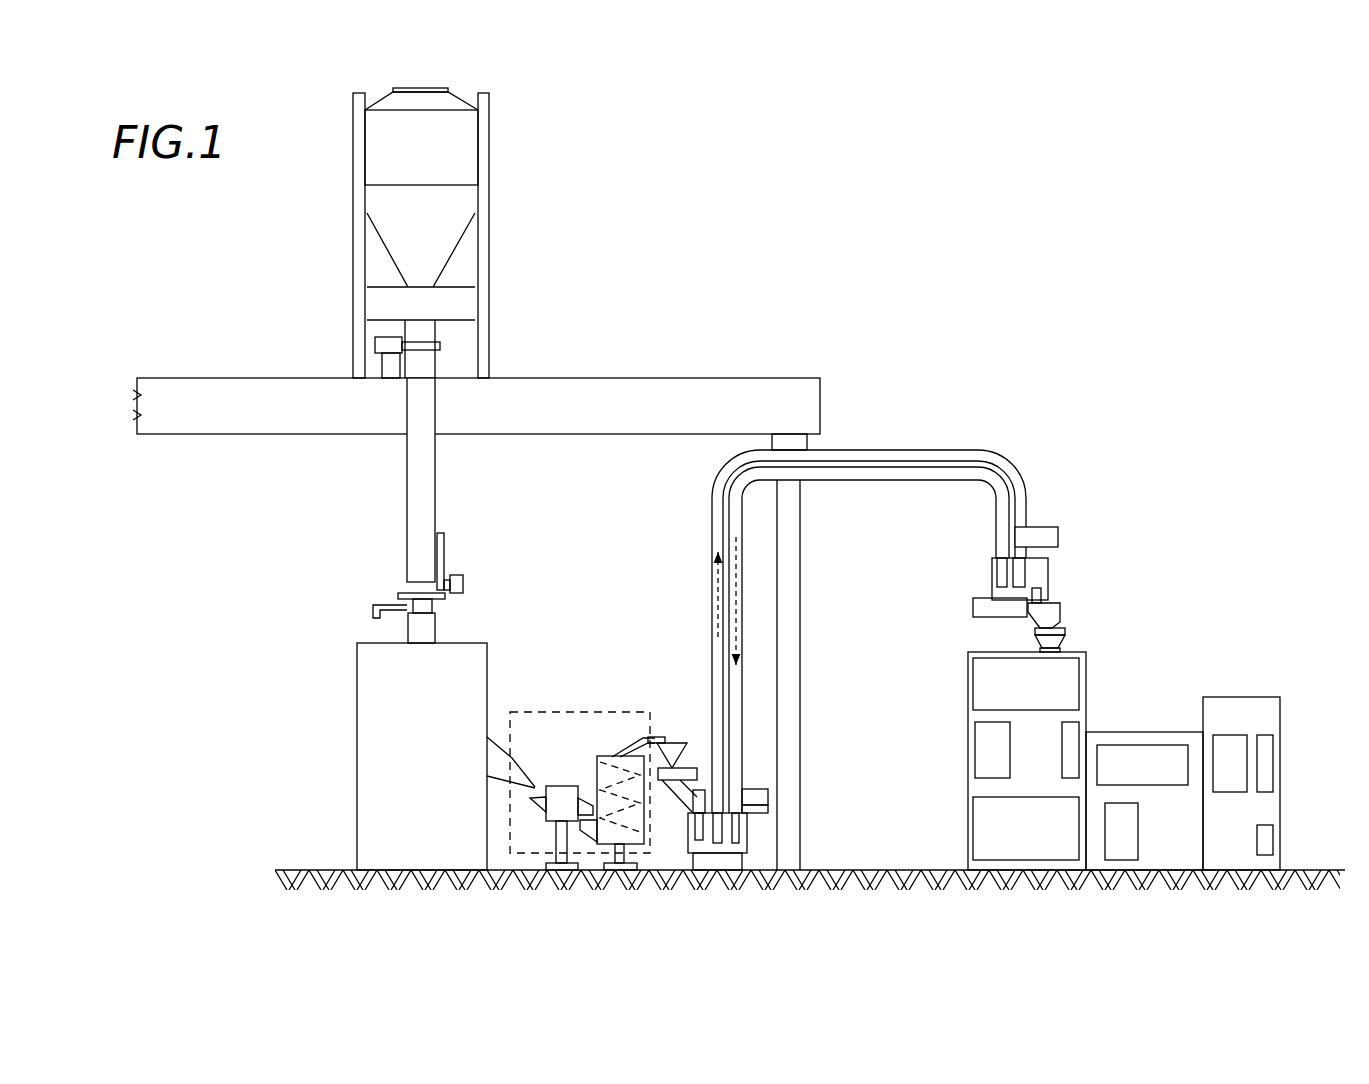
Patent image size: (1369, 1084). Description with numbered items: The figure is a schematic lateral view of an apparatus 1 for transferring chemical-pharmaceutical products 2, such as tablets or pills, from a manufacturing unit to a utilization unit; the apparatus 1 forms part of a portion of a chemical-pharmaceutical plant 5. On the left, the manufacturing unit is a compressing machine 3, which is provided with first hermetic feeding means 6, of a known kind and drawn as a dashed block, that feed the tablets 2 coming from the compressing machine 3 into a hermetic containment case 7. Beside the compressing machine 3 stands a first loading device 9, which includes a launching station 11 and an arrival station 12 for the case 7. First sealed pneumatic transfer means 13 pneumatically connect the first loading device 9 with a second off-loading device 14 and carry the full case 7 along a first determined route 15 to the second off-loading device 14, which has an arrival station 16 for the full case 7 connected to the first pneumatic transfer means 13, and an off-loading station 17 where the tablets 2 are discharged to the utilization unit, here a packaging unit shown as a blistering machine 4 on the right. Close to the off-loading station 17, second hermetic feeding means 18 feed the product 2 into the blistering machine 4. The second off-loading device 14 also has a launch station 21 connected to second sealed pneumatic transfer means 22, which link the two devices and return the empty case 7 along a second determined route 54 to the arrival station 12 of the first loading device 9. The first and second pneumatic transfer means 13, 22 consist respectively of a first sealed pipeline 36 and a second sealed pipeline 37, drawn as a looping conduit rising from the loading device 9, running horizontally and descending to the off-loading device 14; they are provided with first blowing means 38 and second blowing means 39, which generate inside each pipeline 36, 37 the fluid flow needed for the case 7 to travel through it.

The apparatus 1 is at (895, 218).
The products 2 is at (539, 782).
The compressing machine 3 is at (378, 658).
The blistering machine 4 is at (1177, 715).
The chemical-pharmaceutical plant portion 5 is at (522, 304).
The first hermetic feeding means 6 is at (510, 823).
The hermetic containment case 7 is at (683, 815).
The first loading device 9 is at (710, 855).
The launching station 11 is at (720, 812).
The arrival station 12 is at (747, 823).
The first sealed pneumatic transfer means 13 is at (975, 445).
The second off-loading device 14 is at (988, 575).
The first determined route 15 is at (717, 570).
The arrival station 16 is at (1030, 555).
The off-loading station 17 is at (1042, 597).
The second hermetic feeding means 18 is at (1072, 633).
The launch station 21 is at (985, 557).
The second sealed pneumatic transfer means 22 is at (825, 480).
The first sealed pipeline 36 is at (850, 447).
The second sealed pipeline 37 is at (892, 480).
The first blowing means 38 is at (1043, 525).
The second blowing means 39 is at (760, 802).
The second determined route 54 is at (735, 593).